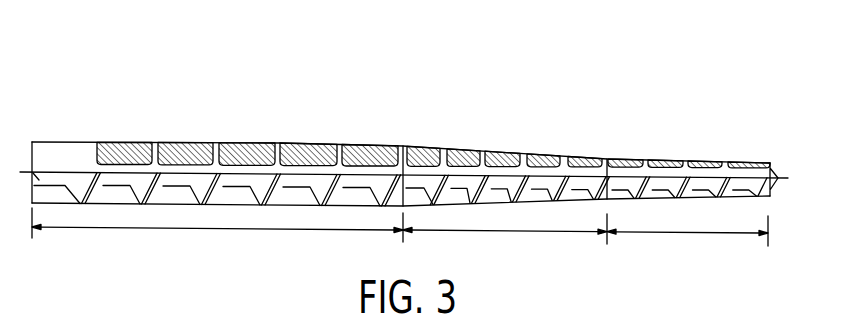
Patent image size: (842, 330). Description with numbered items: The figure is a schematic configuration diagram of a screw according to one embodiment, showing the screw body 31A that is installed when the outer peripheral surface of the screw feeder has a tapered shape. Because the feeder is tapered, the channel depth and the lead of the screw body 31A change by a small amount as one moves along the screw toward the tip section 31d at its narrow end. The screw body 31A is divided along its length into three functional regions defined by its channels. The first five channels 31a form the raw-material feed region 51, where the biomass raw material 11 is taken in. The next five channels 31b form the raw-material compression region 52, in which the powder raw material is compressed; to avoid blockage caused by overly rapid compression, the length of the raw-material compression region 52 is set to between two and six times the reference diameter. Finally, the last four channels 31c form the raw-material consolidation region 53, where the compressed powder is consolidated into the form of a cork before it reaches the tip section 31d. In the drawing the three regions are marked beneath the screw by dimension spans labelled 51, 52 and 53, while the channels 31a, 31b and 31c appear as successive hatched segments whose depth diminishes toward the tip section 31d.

The biomass raw material 11 is at (122, 142).
The screw body 31A is at (321, 90).
The channels 31a is at (187, 142).
The channels 31b is at (463, 152).
The channels 31c is at (668, 160).
The tip section 31d is at (776, 164).
The raw-material feed region 51 is at (217, 234).
The raw-material compression region 52 is at (505, 238).
The raw-material consolidation region 53 is at (687, 239).